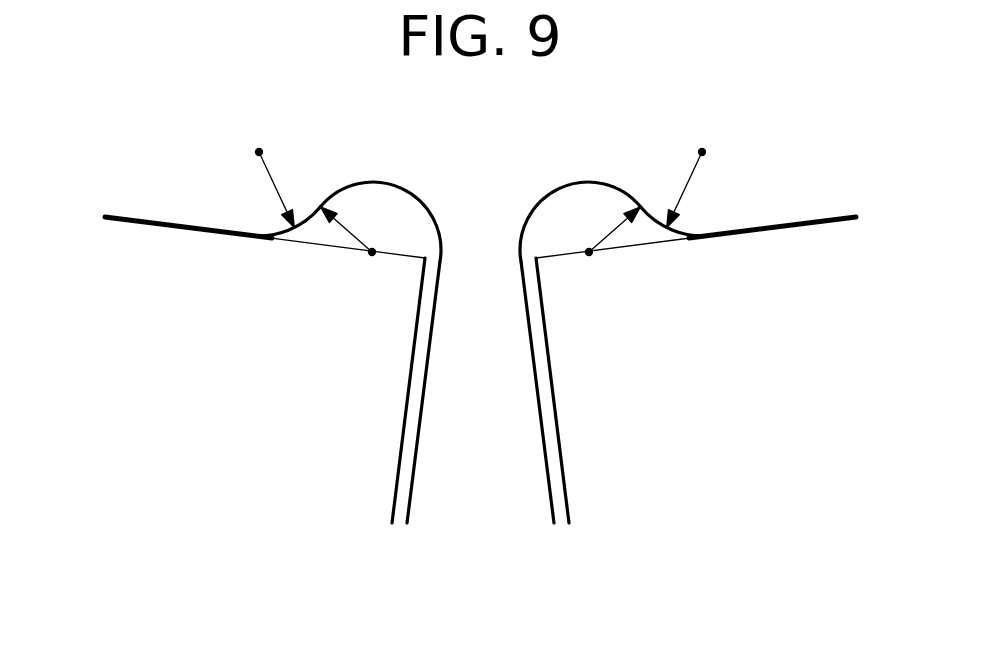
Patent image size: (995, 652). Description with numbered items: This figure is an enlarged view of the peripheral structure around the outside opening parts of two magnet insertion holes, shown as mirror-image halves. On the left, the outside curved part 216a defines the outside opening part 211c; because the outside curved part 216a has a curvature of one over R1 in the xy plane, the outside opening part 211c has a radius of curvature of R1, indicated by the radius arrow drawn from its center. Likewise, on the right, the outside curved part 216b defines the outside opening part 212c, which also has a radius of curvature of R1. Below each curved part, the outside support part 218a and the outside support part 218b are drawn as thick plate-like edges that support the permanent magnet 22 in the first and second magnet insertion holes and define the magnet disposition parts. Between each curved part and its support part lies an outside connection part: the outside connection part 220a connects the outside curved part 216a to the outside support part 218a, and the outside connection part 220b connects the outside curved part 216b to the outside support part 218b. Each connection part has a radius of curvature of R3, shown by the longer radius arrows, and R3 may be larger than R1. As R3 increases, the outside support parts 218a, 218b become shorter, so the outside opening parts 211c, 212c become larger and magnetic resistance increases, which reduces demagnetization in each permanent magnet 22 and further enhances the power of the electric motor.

The permanent magnet 22 is at (380, 410).
The outside opening part 211c is at (288, 217).
The outside opening part 212c is at (673, 217).
The outside curved part 216a is at (380, 184).
The outside curved part 216b is at (580, 187).
The outside support part 218a is at (164, 232).
The outside support part 218b is at (696, 207).
The outside connection part 220a is at (286, 229).
The outside connection part 220b is at (701, 264).
The radius of curvature R1 is at (481, 229).
The radius of curvature R3 is at (480, 188).